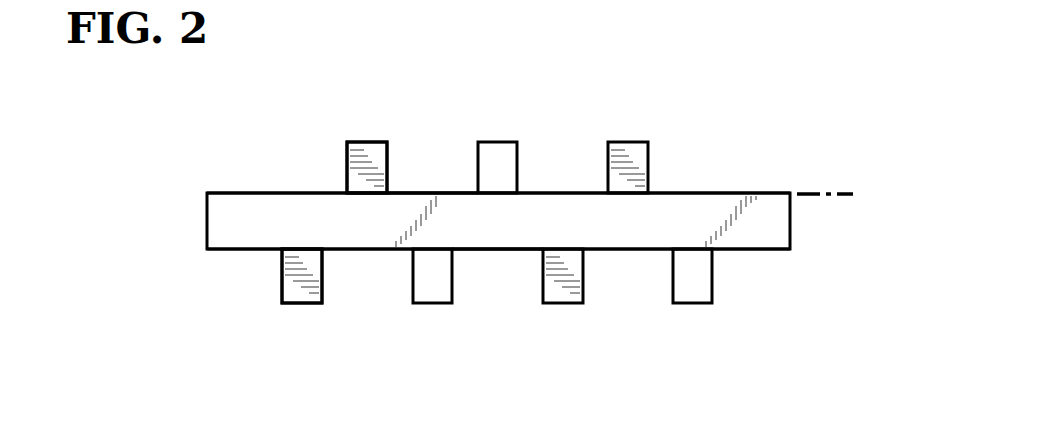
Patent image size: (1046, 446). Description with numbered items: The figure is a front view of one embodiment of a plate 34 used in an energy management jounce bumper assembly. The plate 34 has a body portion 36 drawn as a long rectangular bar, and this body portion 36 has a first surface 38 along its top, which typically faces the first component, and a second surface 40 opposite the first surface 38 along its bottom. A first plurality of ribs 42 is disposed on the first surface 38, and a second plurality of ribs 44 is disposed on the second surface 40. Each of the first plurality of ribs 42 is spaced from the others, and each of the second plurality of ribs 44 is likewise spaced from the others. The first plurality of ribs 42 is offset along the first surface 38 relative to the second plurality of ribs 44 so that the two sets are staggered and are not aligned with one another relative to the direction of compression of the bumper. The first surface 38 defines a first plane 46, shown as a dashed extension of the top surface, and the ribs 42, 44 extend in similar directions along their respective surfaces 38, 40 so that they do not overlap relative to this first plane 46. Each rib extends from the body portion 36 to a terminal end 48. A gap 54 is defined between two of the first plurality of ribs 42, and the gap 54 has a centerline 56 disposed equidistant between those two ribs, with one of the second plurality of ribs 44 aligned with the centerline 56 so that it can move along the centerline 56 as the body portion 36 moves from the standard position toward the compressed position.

The plate 34 is at (806, 180).
The body portion 36 is at (788, 224).
The first surface 38 is at (218, 187).
The second surface 40 is at (223, 255).
The first plurality of ribs 42 is at (490, 158).
The second plurality of ribs 44 is at (443, 290).
The first plane 46 is at (838, 197).
The terminal end 48 is at (341, 147).
The gap 54 is at (472, 187).
The centerline 56 is at (455, 280).